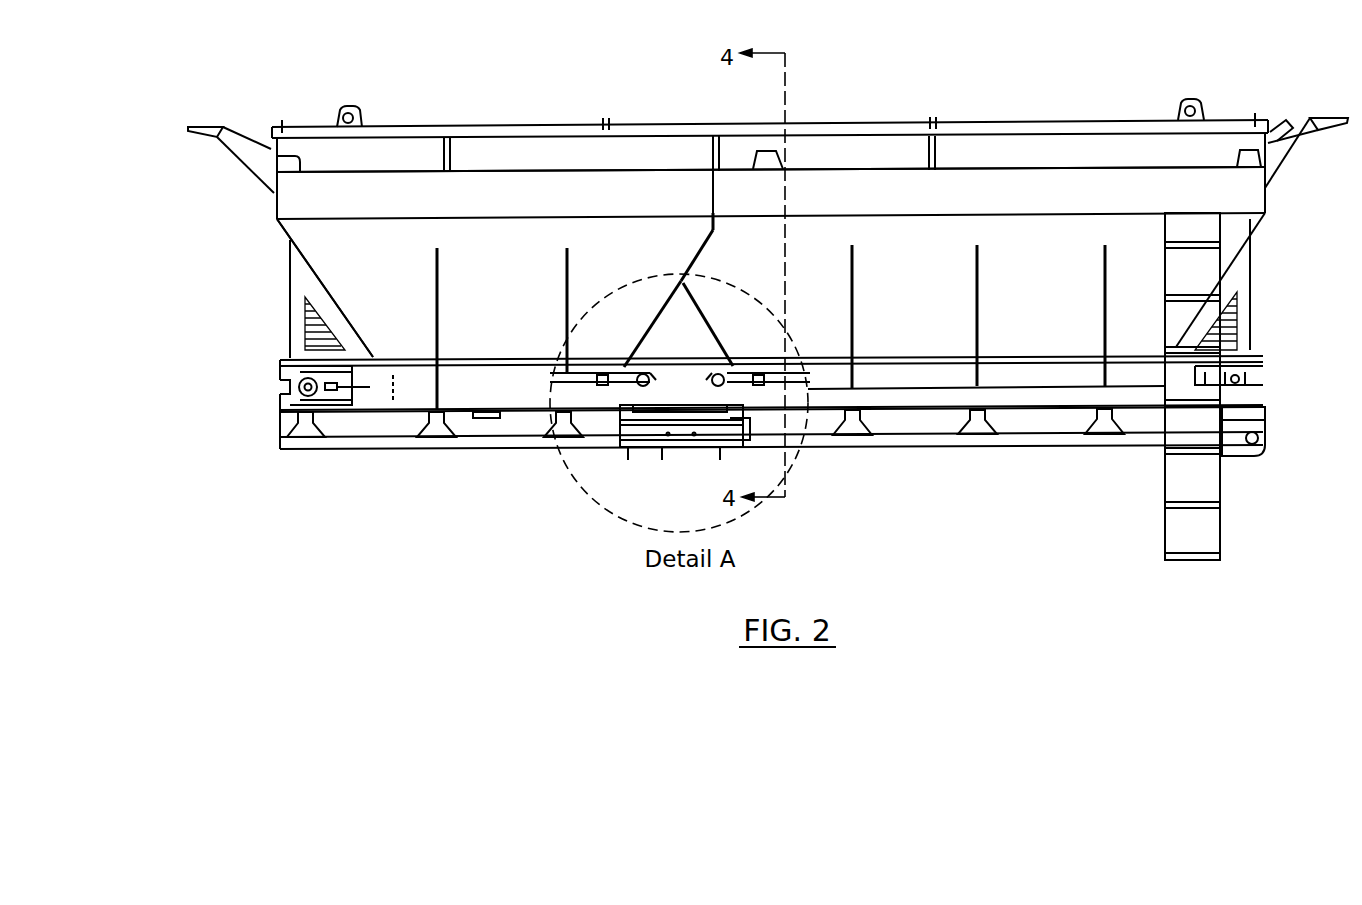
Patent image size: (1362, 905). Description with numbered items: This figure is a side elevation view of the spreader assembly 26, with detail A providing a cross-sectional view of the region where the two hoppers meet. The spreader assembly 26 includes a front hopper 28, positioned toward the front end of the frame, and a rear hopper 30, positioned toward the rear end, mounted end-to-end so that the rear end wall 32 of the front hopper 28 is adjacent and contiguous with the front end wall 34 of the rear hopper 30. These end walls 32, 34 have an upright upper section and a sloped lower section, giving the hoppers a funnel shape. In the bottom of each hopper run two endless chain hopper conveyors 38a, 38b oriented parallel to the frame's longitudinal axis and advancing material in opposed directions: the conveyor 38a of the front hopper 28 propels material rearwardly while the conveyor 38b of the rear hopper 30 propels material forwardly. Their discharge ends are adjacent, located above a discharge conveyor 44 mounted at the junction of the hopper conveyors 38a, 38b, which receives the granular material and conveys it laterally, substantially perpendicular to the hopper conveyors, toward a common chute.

The spreader assembly 26 is at (472, 103).
The front hopper 28 is at (358, 170).
The rear hopper 30 is at (905, 166).
The rear end wall 32 is at (698, 217).
The front end wall 34 is at (720, 193).
The hopper conveyor 38a is at (638, 386).
The hopper conveyor 38b is at (722, 386).
The discharge conveyor 44 is at (668, 447).